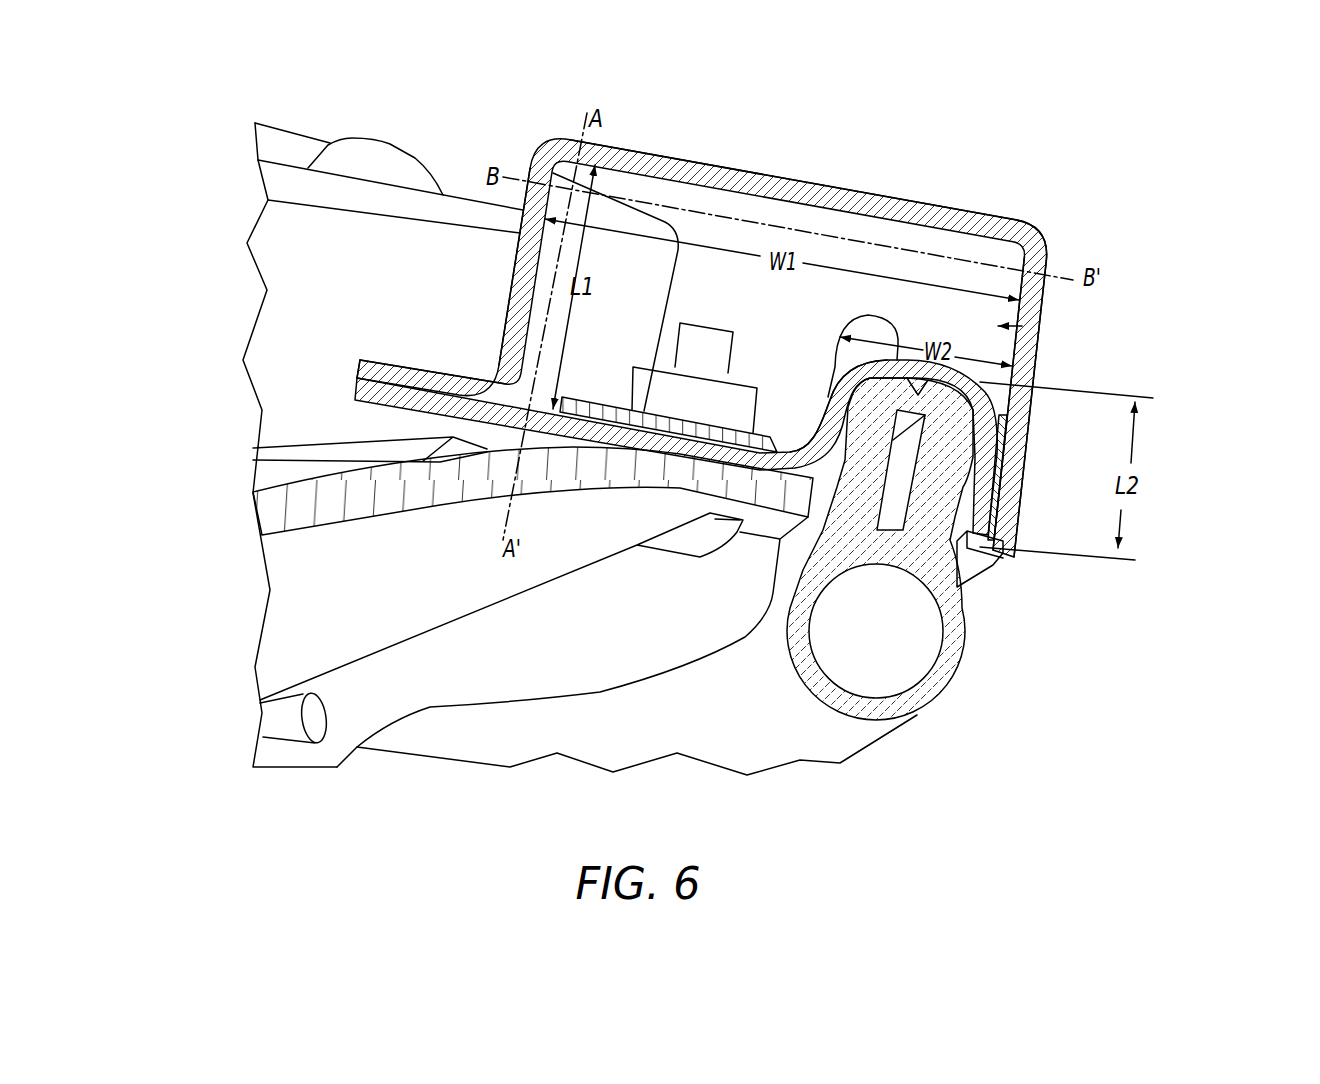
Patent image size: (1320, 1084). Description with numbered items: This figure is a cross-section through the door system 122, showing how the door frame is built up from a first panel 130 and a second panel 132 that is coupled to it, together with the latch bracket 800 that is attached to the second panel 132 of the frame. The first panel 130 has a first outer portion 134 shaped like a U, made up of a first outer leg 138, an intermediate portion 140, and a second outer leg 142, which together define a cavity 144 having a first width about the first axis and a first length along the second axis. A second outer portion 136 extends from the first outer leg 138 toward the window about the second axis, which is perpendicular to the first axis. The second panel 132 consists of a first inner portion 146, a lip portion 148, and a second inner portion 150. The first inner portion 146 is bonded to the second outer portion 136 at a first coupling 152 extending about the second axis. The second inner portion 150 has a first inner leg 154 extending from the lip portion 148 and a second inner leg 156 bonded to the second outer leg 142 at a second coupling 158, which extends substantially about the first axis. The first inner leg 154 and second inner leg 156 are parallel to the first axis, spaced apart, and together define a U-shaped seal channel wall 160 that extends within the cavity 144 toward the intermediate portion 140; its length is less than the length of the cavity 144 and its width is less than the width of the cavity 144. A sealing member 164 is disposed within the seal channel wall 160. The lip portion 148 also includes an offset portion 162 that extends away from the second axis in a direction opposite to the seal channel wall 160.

The door system 122 is at (1152, 178).
The first panel 130 is at (470, 197).
The second panel 132 is at (380, 406).
The first outer portion 134 is at (1056, 208).
The second outer portion 136 is at (420, 372).
The first outer leg 138 is at (515, 253).
The intermediate portion 140 is at (1036, 224).
The second outer leg 142 is at (1034, 364).
The cavity 144 is at (1040, 318).
The first inner portion 146 is at (418, 398).
The lip portion 148 is at (490, 422).
The second inner portion 150 is at (1008, 360).
The first coupling 152 is at (373, 360).
The first inner leg 154 is at (773, 438).
The second inner leg 156 is at (996, 478).
The second coupling 158 is at (1000, 500).
The seal channel wall 160 is at (838, 428).
The offset portion 162 is at (775, 425).
The sealing member 164 is at (940, 576).
The latch bracket 800 is at (297, 632).